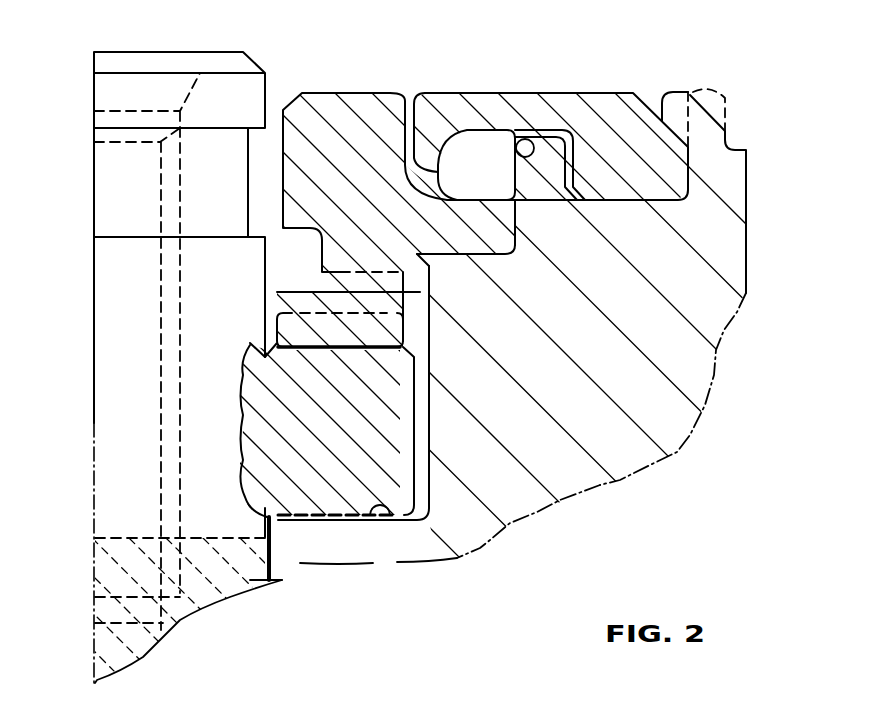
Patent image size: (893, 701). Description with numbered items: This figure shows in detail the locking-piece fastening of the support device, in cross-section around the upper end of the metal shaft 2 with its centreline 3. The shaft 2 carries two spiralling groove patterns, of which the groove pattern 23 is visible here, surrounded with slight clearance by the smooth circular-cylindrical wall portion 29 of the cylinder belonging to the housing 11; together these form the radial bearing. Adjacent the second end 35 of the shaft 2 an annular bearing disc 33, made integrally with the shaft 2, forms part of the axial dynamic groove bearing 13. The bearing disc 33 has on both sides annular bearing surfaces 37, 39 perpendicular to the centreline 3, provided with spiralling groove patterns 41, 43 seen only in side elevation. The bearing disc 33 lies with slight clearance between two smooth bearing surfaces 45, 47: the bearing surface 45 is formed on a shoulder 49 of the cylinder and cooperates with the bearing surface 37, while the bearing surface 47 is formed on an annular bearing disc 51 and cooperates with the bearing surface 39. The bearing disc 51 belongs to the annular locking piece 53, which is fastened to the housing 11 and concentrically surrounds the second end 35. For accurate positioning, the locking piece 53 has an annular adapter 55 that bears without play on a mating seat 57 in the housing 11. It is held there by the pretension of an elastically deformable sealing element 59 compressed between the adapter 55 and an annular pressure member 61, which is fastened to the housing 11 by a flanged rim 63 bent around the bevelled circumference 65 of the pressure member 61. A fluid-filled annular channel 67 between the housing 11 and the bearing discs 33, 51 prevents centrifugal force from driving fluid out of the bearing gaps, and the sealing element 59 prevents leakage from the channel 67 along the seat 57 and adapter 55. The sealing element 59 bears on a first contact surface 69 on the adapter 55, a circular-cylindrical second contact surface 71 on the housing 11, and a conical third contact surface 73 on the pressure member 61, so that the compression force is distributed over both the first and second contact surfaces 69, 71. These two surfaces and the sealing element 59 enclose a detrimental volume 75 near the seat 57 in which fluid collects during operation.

The shaft 2 is at (118, 403).
The centreline 3 is at (95, 197).
The housing 11 is at (688, 398).
The axial dynamic groove bearing 13 is at (418, 430).
The spiralling groove pattern 23 is at (130, 560).
The smooth circular-cylindrical wall portion 29 is at (275, 563).
The annular bearing disc 33 is at (283, 462).
The second end of the shaft 35 is at (120, 157).
The annular bearing surface 37 is at (308, 517).
The annular bearing surface 39 is at (247, 368).
The spiralling groove pattern 41 is at (393, 524).
The spiralling groove pattern 43 is at (427, 373).
The smooth bearing surface 45 is at (352, 518).
The smooth bearing surface 47 is at (425, 305).
The shoulder 49 is at (432, 543).
The annular bearing disc 51 is at (312, 300).
The annular locking piece 53 is at (348, 115).
The annular adapter 55 is at (500, 226).
The seat 57 is at (483, 257).
The elastically deformable sealing element 59 is at (455, 150).
The annular pressure member 61 is at (586, 113).
The flanged rim 63 is at (686, 98).
The bevelled circumference 65 is at (650, 105).
The annular channel 67 is at (420, 470).
The first contact surface 69 is at (505, 213).
The second contact surface 71 is at (532, 150).
The third contact surface 73 is at (462, 167).
The detrimental volume 75 is at (525, 197).